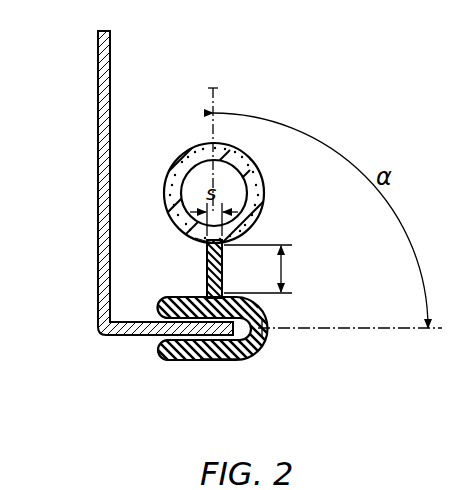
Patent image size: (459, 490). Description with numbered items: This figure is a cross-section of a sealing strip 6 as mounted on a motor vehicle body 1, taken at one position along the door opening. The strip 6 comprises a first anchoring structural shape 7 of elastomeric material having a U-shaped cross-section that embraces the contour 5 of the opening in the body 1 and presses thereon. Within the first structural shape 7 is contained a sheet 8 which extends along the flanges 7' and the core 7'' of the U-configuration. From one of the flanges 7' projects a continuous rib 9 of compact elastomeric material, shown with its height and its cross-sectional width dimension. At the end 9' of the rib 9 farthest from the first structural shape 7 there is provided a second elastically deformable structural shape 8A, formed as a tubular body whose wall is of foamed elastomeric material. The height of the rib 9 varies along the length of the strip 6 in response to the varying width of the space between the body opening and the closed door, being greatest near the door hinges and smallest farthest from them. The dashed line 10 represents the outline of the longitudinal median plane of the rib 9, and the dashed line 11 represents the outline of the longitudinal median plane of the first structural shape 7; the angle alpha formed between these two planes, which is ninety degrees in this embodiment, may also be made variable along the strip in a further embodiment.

The motor vehicle body 1 is at (100, 126).
The contour of the opening 5 is at (230, 362).
The sealing strip 6 is at (300, 246).
The first anchoring structural shape 7 is at (212, 341).
The flanges 7' is at (157, 350).
The core 7'' is at (307, 317).
The sheet 8 is at (268, 317).
The second elastically deformable structural shape 8A is at (258, 173).
The rib 9 is at (216, 268).
The end of rib 9' is at (177, 234).
The dashed line 10 is at (214, 93).
The dashed line 11 is at (380, 326).